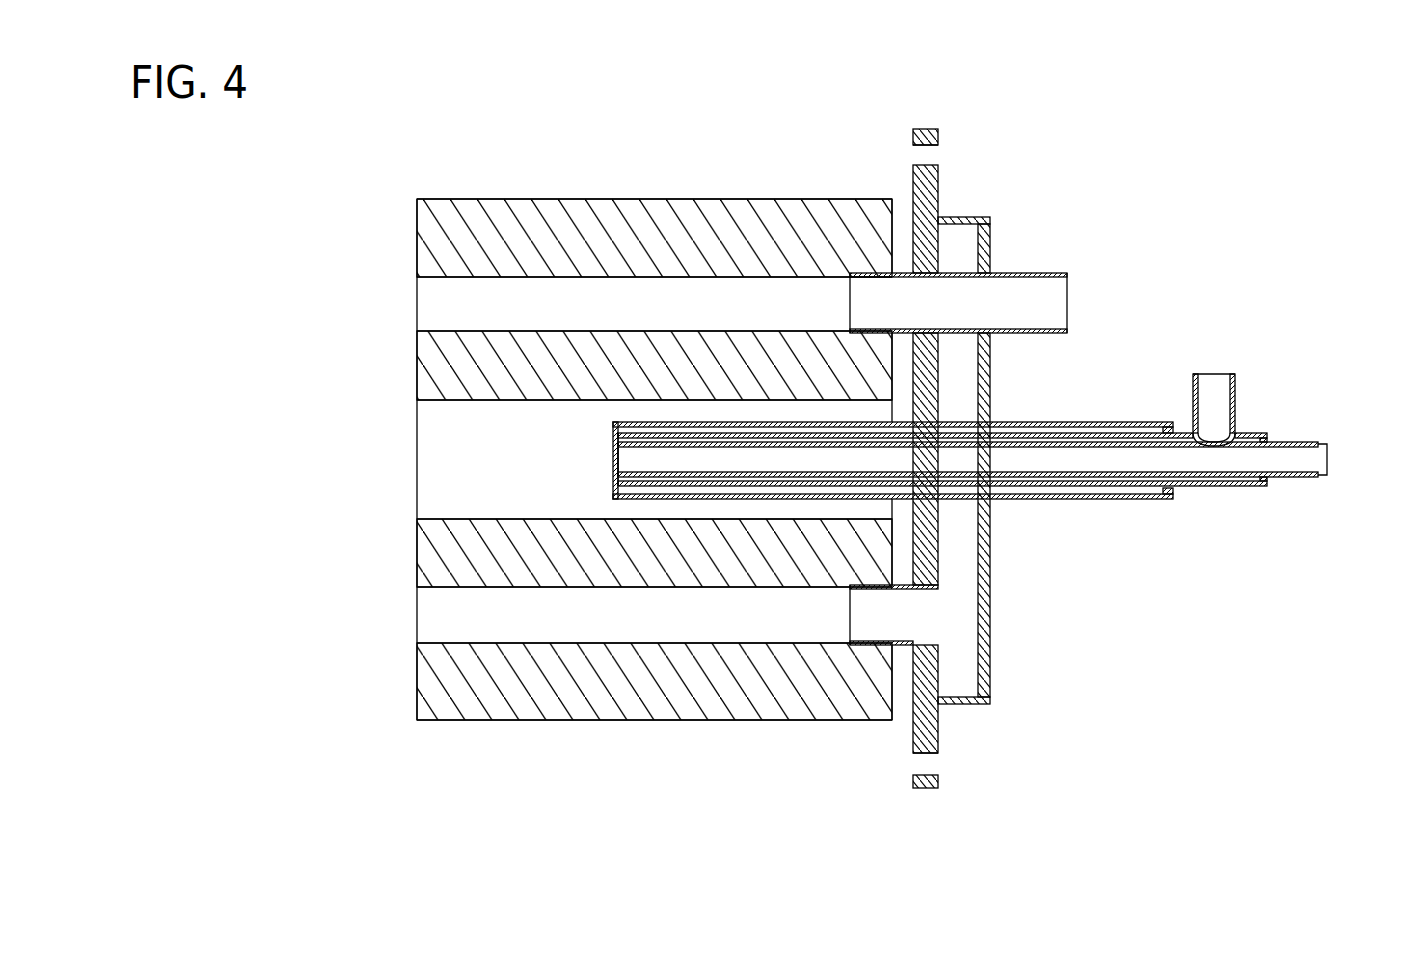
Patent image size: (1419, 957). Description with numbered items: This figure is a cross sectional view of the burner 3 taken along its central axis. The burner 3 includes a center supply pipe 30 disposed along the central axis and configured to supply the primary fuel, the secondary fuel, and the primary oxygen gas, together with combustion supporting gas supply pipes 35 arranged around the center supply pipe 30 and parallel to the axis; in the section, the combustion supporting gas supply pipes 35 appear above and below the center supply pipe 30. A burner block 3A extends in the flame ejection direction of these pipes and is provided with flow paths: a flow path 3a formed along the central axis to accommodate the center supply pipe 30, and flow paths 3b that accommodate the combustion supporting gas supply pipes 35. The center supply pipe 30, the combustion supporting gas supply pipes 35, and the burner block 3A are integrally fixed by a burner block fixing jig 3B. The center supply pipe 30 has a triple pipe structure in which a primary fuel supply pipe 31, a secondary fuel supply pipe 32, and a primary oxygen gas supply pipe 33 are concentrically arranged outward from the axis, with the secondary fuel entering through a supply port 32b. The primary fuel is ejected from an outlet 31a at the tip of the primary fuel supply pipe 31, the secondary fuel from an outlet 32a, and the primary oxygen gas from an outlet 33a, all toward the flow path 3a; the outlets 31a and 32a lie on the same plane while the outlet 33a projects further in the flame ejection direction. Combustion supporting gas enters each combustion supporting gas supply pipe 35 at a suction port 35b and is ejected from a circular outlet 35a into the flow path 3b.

The burner 3 is at (366, 130).
The burner block 3A is at (491, 182).
The burner block fixing jig 3B is at (950, 190).
The flow path 3a is at (650, 522).
The flow path 3b is at (566, 288).
The center supply pipe 30 is at (1074, 517).
The primary fuel supply pipe 31 is at (690, 452).
The outlet 31a is at (613, 472).
The secondary fuel supply pipe 32 is at (665, 433).
The outlet 32a is at (613, 481).
The supply port 32b is at (1212, 374).
The primary oxygen gas supply pipe 33 is at (716, 490).
The outlet 33a is at (613, 492).
The combustion supporting gas supply pipe 35 is at (856, 328).
The outlet 35a is at (848, 270).
The suction port 35b is at (938, 278).